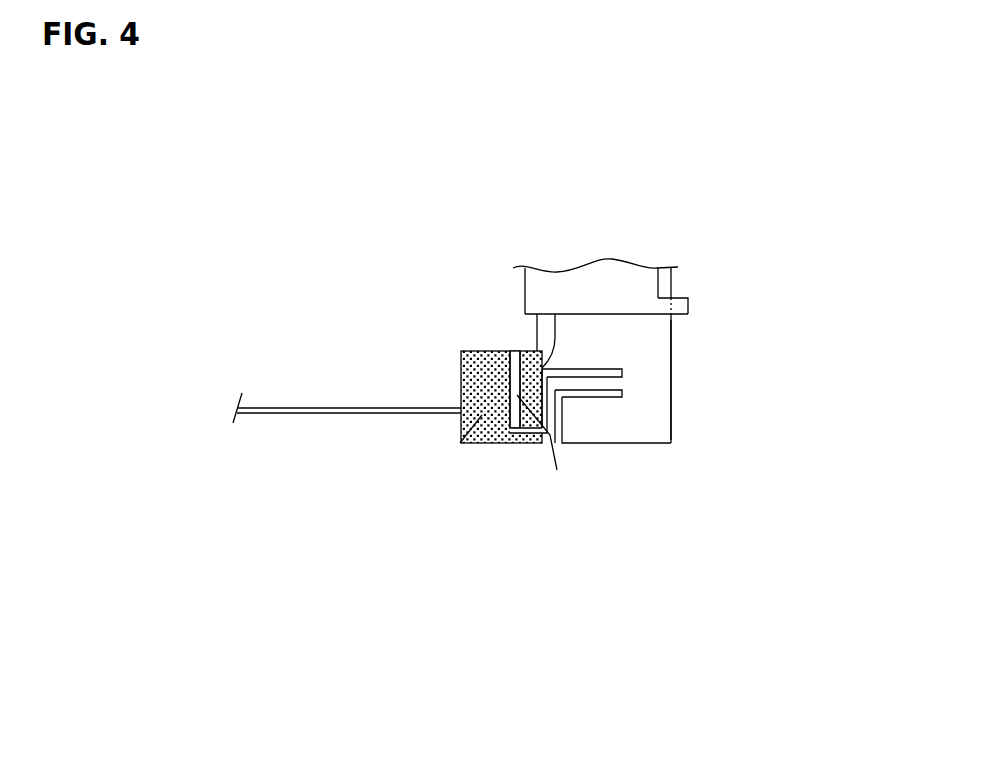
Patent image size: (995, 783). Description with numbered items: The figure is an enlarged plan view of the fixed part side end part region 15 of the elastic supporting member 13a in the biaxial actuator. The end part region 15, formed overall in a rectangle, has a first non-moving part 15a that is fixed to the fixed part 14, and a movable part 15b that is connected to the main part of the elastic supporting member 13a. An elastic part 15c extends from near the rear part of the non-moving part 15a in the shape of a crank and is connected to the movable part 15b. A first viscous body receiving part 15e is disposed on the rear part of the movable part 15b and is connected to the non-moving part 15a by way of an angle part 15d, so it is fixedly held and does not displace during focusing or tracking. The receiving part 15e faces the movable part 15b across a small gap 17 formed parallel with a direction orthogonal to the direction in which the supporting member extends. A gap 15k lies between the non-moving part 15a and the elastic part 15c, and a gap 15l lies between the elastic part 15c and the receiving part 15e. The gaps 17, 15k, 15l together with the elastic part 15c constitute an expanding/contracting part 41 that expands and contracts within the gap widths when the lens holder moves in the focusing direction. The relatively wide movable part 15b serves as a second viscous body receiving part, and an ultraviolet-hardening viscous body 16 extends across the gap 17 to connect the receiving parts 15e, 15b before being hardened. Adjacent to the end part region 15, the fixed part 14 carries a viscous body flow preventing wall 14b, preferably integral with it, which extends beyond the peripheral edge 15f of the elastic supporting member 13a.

The elastic supporting member 13a is at (321, 424).
The fixed part 14 is at (610, 290).
The viscous body flow preventing wall 14b is at (688, 307).
The end part region 15 is at (745, 423).
The non-moving part 15a is at (650, 356).
The movable part 15b is at (477, 363).
The elastic part 15c is at (557, 470).
The angle part 15d is at (554, 334).
The first viscous body receiving part 15e is at (525, 420).
The peripheral edge 15f is at (668, 283).
The gap 15k is at (563, 418).
The gap 15l is at (545, 393).
The viscous body 16 is at (460, 443).
The gap 17 is at (537, 430).
The expanding/contracting part 41 is at (782, 463).